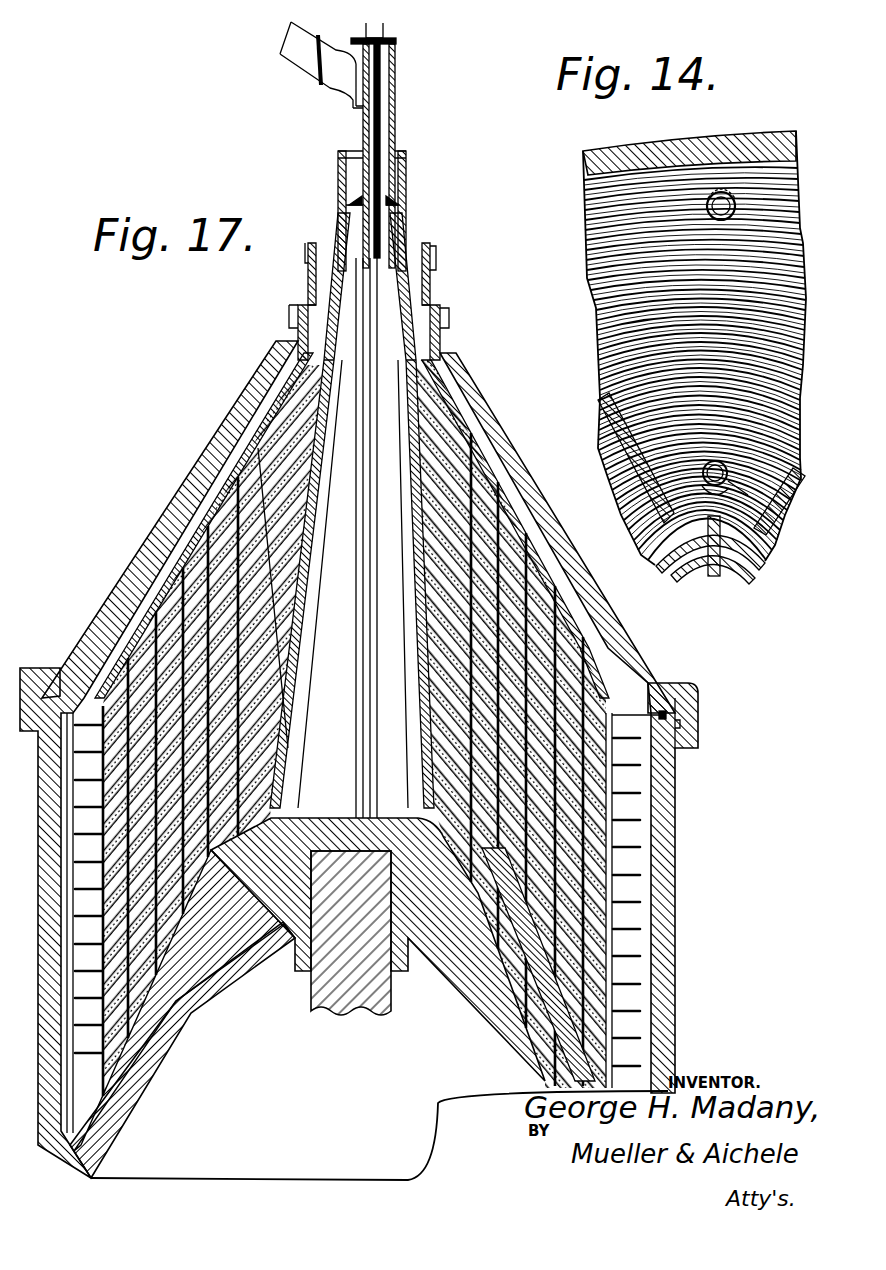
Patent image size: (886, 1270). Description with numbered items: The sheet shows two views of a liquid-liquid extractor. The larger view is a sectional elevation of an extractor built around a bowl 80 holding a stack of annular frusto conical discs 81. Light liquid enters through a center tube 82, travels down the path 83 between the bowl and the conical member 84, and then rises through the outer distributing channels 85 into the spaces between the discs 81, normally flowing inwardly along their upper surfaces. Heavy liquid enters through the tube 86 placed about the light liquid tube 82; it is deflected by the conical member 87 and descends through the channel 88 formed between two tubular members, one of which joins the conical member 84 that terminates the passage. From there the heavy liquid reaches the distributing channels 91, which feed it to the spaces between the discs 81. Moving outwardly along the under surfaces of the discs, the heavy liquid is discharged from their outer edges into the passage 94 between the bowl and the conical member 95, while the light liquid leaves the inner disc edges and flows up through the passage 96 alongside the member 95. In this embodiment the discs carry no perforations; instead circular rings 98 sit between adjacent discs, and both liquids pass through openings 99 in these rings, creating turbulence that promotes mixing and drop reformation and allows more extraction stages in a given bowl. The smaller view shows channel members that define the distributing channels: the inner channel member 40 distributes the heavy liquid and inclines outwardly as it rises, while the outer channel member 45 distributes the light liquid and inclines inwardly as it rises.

In FIG. 17, the bowl 80 is at (127, 563).
In FIG. 17, the frusto conical discs 81 is at (280, 440).
In FIG. 17, the center tube 82 is at (372, 122).
In FIG. 17, the path 83 is at (125, 1048).
In FIG. 17, the conical member 84 is at (143, 985).
In FIG. 17, the outer distributing channels 85 is at (648, 676).
In FIG. 17, the tube 86 is at (386, 140).
In FIG. 17, the conical member 87 is at (392, 192).
In FIG. 17, the channel 88 is at (328, 330).
In FIG. 17, the distributing channels 91 is at (480, 457).
In FIG. 17, the passage 94 is at (452, 392).
In FIG. 17, the conical member 95 is at (434, 340).
In FIG. 17, the passage 96 is at (424, 268).
In FIG. 17, the circular rings 98 is at (180, 565).
In FIG. 17, the openings 99 is at (222, 497).
In FIG. 14, the outer channel member 45 is at (717, 187).
In FIG. 14, the inner channel member 40 is at (777, 507).